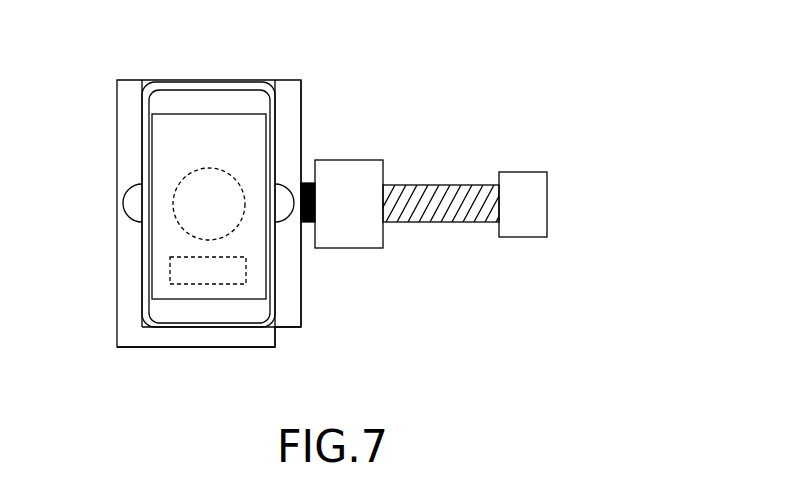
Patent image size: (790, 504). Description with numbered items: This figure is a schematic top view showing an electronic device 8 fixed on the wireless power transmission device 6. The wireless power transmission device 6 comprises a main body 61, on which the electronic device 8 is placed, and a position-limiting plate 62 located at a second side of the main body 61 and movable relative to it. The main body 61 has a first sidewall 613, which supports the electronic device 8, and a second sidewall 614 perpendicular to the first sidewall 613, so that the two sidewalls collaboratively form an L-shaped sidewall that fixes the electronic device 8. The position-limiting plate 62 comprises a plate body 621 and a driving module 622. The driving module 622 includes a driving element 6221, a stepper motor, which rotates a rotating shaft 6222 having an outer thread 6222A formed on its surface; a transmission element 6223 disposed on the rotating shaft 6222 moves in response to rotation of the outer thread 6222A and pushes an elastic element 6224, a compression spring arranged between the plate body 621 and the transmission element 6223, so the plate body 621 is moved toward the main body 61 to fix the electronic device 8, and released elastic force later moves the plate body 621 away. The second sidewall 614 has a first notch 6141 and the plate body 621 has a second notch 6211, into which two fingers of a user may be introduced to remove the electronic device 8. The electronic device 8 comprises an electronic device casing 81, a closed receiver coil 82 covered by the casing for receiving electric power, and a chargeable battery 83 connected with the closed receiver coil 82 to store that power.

The wireless power transmission device 6 is at (590, 43).
The main body 61 is at (117, 118).
The second sidewall 614 is at (130, 302).
The first notch 6141 is at (135, 198).
The first sidewall 613 is at (227, 337).
The position-limiting plate 62 is at (308, 299).
The plate body 621 is at (288, 120).
The second notch 6211 is at (289, 218).
The driving module 622 is at (617, 98).
The driving element 6221 is at (523, 183).
The rotating shaft 6222 is at (415, 192).
The outer thread 6222A is at (448, 216).
The transmission element 6223 is at (350, 170).
The elastic element 6224 is at (303, 182).
The electronic device 8 is at (195, 93).
The electronic device casing 81 is at (235, 97).
The closed receiver coil 82 is at (210, 177).
The chargeable battery 83 is at (213, 274).